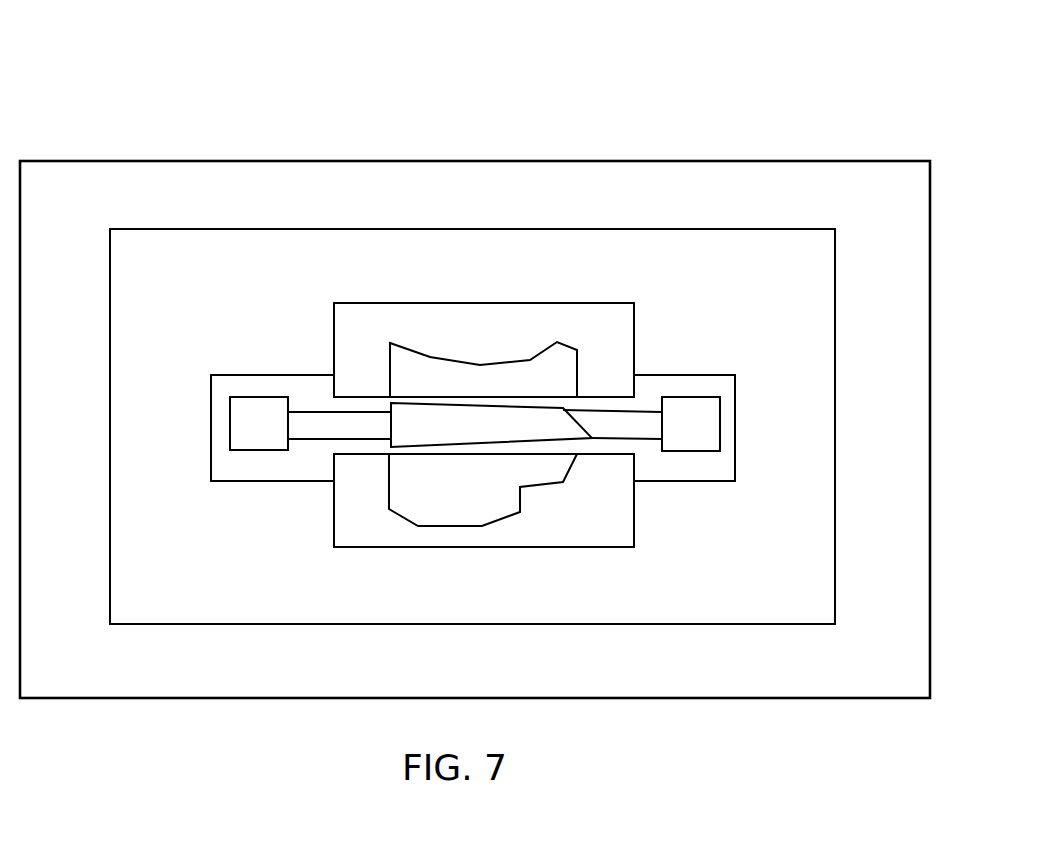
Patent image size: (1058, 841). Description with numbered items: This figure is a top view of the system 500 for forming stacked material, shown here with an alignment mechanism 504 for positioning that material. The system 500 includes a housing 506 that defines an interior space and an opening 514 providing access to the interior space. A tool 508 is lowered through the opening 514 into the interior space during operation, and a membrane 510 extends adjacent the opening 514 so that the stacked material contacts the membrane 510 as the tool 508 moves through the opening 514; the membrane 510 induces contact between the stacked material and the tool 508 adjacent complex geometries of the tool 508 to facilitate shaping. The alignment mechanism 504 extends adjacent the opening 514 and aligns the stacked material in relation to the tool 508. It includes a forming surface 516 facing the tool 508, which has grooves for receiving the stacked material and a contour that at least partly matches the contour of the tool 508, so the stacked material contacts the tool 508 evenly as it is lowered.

The system 500 is at (135, 71).
The alignment mechanism 504 is at (517, 333).
The housing 506 is at (55, 170).
The tool 508 is at (455, 433).
The membrane 510 is at (718, 388).
The opening 514 is at (232, 460).
The forming surface 516 is at (577, 380).